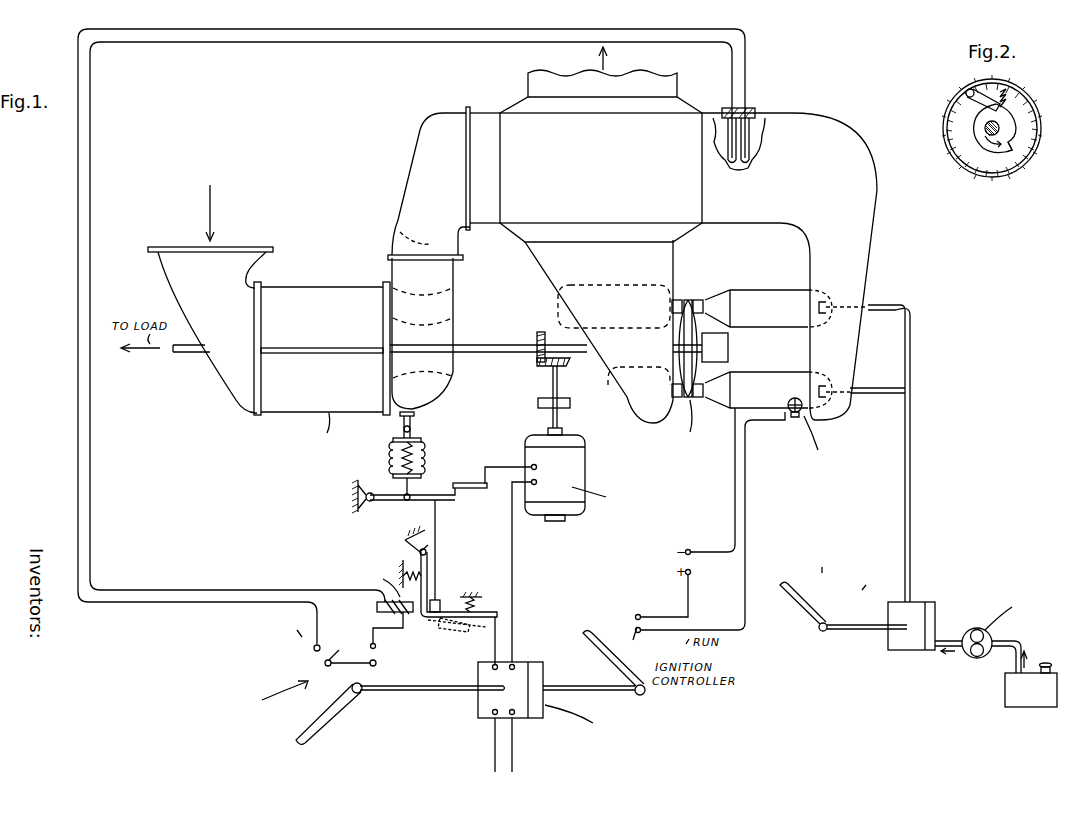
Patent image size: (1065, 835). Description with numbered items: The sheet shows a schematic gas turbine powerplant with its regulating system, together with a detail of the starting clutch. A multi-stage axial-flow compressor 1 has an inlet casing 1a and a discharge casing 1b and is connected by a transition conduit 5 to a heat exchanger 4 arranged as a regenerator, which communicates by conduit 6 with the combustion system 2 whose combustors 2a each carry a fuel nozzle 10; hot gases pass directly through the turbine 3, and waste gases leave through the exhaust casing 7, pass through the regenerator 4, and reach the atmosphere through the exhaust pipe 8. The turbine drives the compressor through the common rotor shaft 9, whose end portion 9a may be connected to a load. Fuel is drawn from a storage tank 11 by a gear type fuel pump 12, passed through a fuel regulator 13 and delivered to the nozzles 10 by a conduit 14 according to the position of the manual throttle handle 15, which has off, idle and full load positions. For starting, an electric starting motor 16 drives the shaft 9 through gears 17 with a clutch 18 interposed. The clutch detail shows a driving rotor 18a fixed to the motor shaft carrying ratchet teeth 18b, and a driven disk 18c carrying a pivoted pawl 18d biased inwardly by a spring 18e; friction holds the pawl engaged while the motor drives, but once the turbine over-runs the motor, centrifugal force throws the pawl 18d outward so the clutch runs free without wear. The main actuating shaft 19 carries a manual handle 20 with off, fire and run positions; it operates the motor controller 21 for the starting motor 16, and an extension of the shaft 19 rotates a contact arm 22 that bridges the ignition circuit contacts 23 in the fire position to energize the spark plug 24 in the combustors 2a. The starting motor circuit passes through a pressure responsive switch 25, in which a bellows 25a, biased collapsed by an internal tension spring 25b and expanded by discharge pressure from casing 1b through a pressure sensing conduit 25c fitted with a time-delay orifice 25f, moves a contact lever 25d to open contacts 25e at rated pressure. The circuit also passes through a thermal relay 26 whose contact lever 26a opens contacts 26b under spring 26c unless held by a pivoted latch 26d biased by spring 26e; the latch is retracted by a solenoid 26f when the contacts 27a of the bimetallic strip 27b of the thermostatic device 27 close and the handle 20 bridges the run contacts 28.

In FIG. 1, the compressor 1 is at (327, 278).
In FIG. 1, the inlet casing 1a is at (228, 302).
In FIG. 1, the discharge casing 1b is at (426, 351).
In FIG. 1, the combustion system 2 is at (777, 354).
In FIG. 1, the combustors 2a is at (768, 349).
In FIG. 1, the turbine 3 is at (697, 289).
In FIG. 1, the heat exchanger 4 is at (606, 213).
In FIG. 1, the transition conduit 5 is at (440, 203).
In FIG. 1, the conduit 6 is at (833, 188).
In FIG. 1, the exhaust casing 7 is at (610, 276).
In FIG. 1, the exhaust pipe 8 is at (538, 85).
In FIG. 1, the rotor shaft 9 is at (486, 345).
In FIG. 1, the end portion of rotor shaft 9a is at (190, 353).
In FIG. 1, the fuel nozzles 10 is at (830, 385).
In FIG. 1, the storage tank 11 is at (1036, 702).
In FIG. 1, the fuel pump 12 is at (970, 626).
In FIG. 1, the fuel regulator 13 is at (923, 601).
In FIG. 1, the conduit 14 is at (912, 416).
In FIG. 1, the manual throttle handle 15 is at (802, 612).
In FIG. 1, the starting motor 16 is at (586, 468).
In FIG. 1, the gears 17 is at (546, 338).
In FIG. 1, the clutch 18 is at (572, 402).
In FIG. 2, the clutch 18 is at (936, 136).
In FIG. 2, the driving rotor 18a is at (1005, 124).
In FIG. 2, the ratchet teeth 18b is at (1010, 152).
In FIG. 2, the driven disk 18c is at (960, 164).
In FIG. 2, the pawl 18d is at (968, 101).
In FIG. 2, the pawl spring 18e is at (1014, 90).
In FIG. 1, the actuating shaft 19 is at (419, 692).
In FIG. 1, the manual handle 20 is at (338, 712).
In FIG. 1, the motor controller 21 is at (533, 661).
In FIG. 1, the contact arm 22 is at (604, 654).
In FIG. 1, the ignition circuit contacts 23 is at (638, 633).
In FIG. 1, the spark plug 24 is at (789, 412).
In FIG. 1, the pressure responsive switch 25 is at (458, 471).
In FIG. 1, the bellows 25a is at (388, 463).
In FIG. 1, the tension spring 25b is at (424, 450).
In FIG. 1, the pressure sensing conduit 25c is at (412, 421).
In FIG. 1, the contact lever 25d is at (394, 501).
In FIG. 1, the pressure switch contacts 25e is at (458, 492).
In FIG. 1, the orifice 25f is at (418, 431).
In FIG. 1, the thermal relay 26 is at (431, 651).
In FIG. 1, the contact lever 26a is at (471, 620).
In FIG. 1, the thermal relay contacts 26b is at (444, 600).
In FIG. 1, the spring 26c is at (482, 603).
In FIG. 1, the pivoted latch 26d is at (430, 562).
In FIG. 1, the latch spring 26e is at (410, 548).
In FIG. 1, the solenoid 26f is at (377, 607).
In FIG. 1, the thermostatic device 27 is at (770, 103).
In FIG. 1, the thermostat contacts 27a is at (741, 170).
In FIG. 1, the bimetallic strip 27b is at (762, 142).
In FIG. 1, the run contacts 28 is at (334, 656).